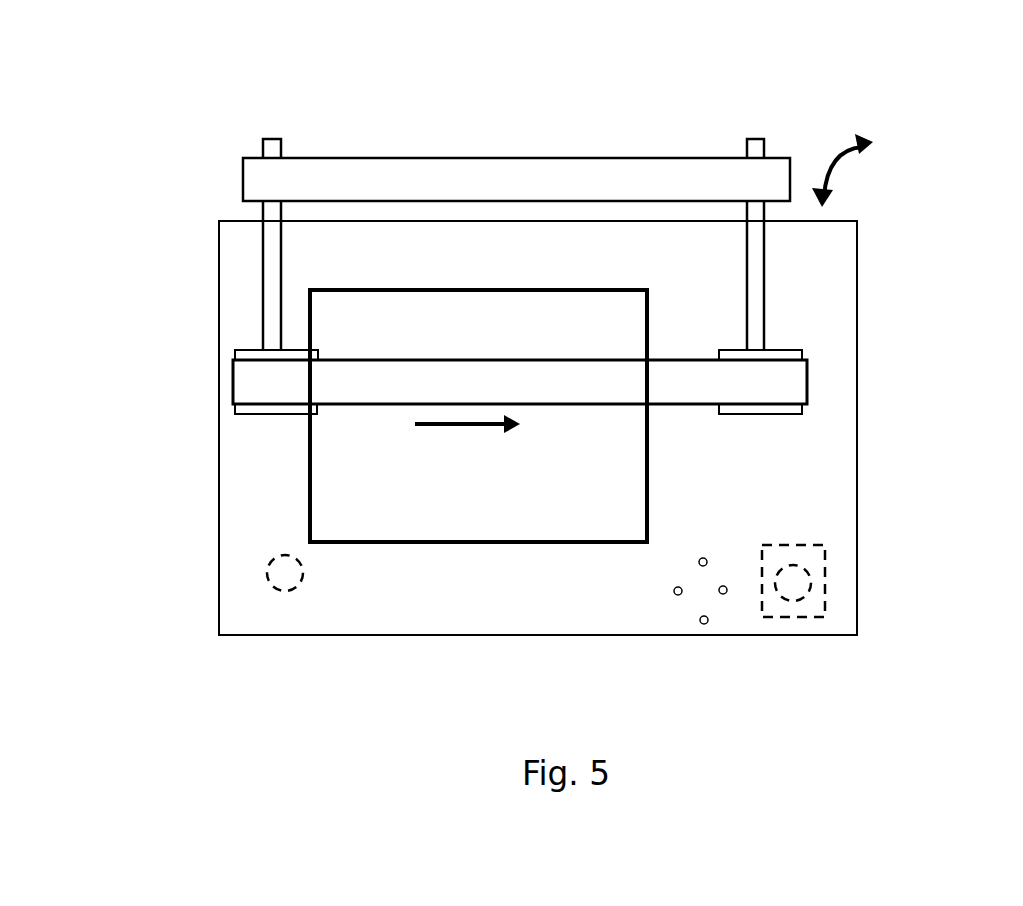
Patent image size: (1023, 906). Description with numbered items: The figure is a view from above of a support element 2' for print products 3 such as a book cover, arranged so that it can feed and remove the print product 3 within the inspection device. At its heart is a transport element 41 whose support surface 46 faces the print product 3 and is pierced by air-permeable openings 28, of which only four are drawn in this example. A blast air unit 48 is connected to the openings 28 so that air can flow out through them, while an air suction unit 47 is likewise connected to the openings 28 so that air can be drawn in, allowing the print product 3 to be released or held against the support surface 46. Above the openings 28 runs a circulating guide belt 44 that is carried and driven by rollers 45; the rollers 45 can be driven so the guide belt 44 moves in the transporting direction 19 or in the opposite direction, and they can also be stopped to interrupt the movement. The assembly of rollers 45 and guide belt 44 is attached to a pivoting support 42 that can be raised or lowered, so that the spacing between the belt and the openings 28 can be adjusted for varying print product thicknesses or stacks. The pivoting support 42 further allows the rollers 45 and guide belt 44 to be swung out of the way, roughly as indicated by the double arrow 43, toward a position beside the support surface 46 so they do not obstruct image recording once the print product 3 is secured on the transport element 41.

The support element 2' is at (953, 197).
The print product 3 is at (502, 525).
The transporting direction 19 is at (445, 430).
The air-permeable openings 28 is at (725, 594).
The transport element 41 is at (227, 238).
The pivoting support 42 is at (542, 172).
The double arrow 43 is at (832, 157).
The guide belt 44 is at (792, 377).
The rollers 45 is at (793, 408).
The support surface 46 is at (837, 497).
The air suction unit 47 is at (793, 585).
The blast air unit 48 is at (285, 577).